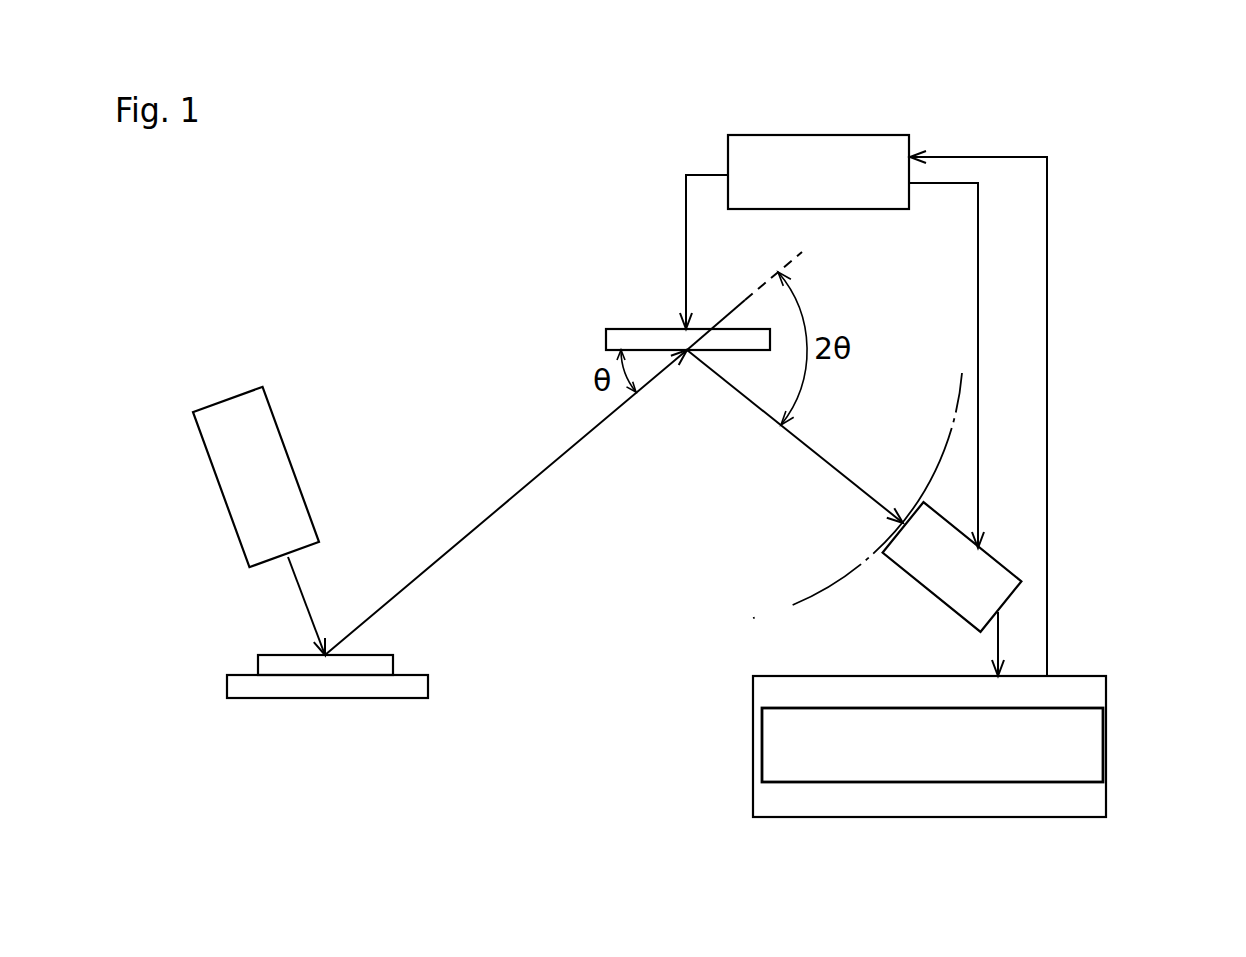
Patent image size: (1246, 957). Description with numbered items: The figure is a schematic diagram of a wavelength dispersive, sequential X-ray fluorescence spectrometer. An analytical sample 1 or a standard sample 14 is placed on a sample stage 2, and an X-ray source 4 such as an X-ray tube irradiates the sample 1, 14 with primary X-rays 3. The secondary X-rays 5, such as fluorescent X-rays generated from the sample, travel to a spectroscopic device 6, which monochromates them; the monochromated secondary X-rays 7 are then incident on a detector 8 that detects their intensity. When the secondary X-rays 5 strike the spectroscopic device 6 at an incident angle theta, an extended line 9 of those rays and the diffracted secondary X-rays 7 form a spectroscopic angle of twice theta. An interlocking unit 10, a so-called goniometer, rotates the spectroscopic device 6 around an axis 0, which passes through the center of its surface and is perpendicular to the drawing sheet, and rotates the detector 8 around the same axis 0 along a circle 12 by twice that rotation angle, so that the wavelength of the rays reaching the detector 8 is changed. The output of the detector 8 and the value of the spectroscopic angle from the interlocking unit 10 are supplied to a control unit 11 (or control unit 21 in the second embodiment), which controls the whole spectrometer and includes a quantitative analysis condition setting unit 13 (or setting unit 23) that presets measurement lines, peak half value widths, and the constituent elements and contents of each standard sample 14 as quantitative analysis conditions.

The axis O 0 is at (688, 352).
The analytical sample 1 is at (393, 642).
The standard sample 14 is at (393, 665).
The sample stage 2 is at (428, 688).
The primary X-rays 3 is at (302, 587).
The X-ray source 4 is at (295, 465).
The secondary X-rays 5 is at (520, 485).
The spectroscopic device 6 is at (660, 328).
The monochromated secondary X-rays 7 is at (815, 450).
The detector 8 is at (932, 595).
The extended line 9 is at (797, 262).
The interlocking unit 10 is at (863, 209).
The control unit 11 is at (927, 742).
The control unit 21 is at (1107, 742).
The circle 12 is at (840, 580).
The quantitative analysis condition setting unit 13 is at (857, 745).
The quantitative analysis condition setting unit 23 is at (753, 738).